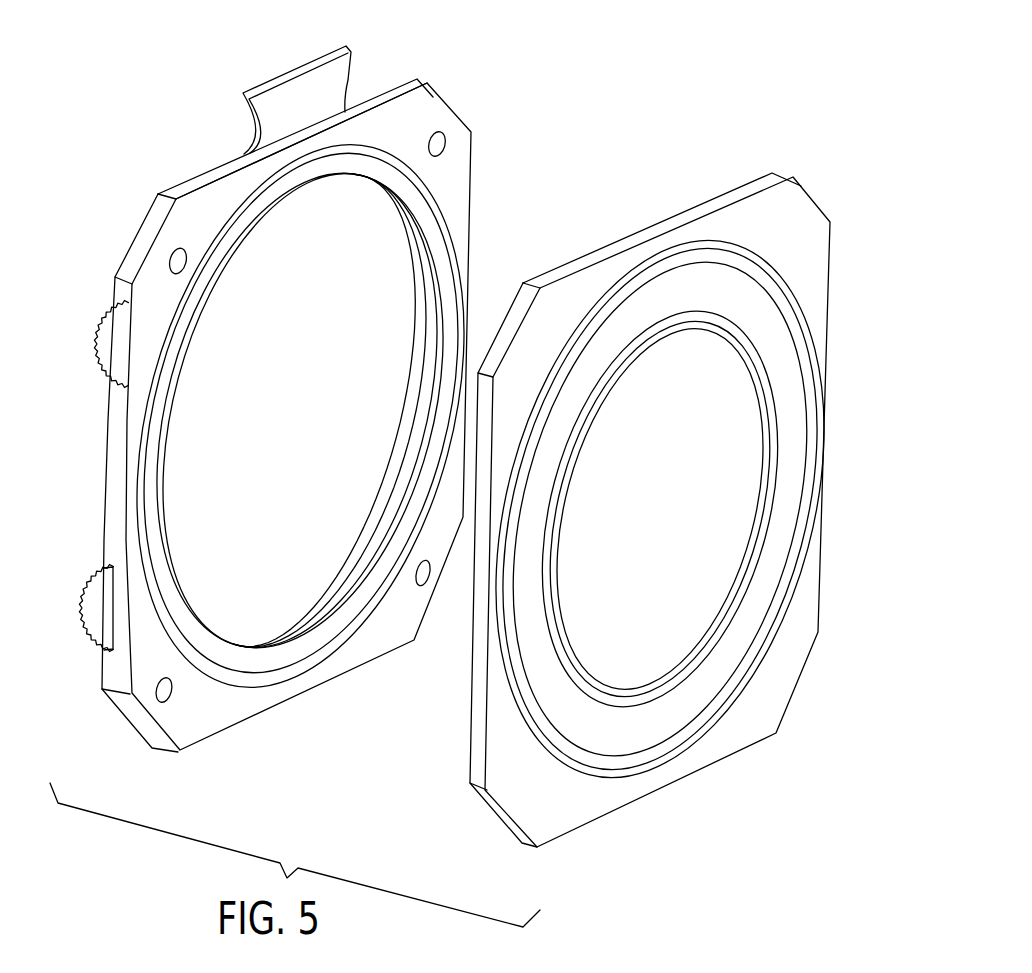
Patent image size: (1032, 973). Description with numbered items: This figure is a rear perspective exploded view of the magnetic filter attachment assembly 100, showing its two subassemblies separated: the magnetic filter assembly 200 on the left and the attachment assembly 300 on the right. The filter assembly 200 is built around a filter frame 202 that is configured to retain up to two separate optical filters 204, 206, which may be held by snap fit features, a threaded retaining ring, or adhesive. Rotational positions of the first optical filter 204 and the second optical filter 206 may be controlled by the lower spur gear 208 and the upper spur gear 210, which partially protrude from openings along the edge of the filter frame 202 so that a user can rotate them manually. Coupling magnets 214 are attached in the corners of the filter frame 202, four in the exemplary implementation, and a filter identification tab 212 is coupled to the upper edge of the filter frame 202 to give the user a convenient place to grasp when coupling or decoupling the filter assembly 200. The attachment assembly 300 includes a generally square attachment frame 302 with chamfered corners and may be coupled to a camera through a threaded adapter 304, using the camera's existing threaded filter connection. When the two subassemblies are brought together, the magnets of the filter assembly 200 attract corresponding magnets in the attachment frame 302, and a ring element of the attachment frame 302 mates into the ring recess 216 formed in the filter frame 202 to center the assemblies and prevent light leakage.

The magnetic filter attachment assembly 100 is at (102, 141).
The magnetic filter assembly 200 is at (496, 72).
The filter frame 202 is at (203, 171).
The first optical filter 204 is at (403, 235).
The second optical filter 206 is at (435, 276).
The lower spur gear 208 is at (84, 617).
The upper spur gear 210 is at (98, 348).
The filter identification tab 212 is at (293, 70).
The coupling magnets 214 is at (443, 130).
The ring recess 216 is at (208, 262).
The attachment assembly 300 is at (853, 150).
The attachment frame 302 is at (822, 567).
The threaded adapter 304 is at (777, 424).